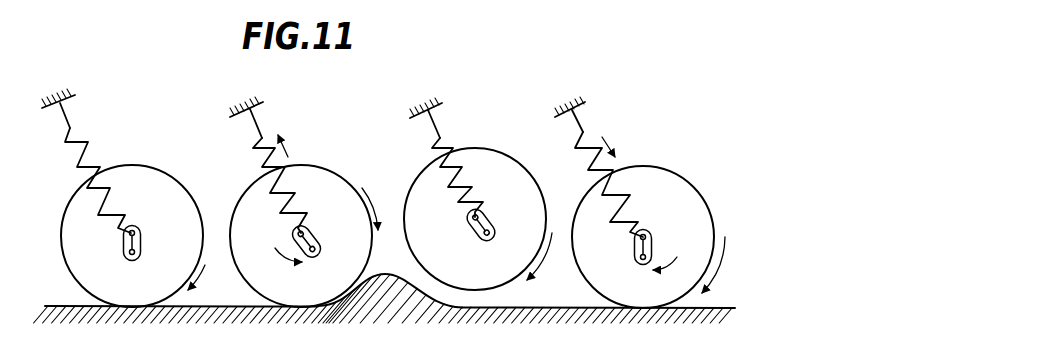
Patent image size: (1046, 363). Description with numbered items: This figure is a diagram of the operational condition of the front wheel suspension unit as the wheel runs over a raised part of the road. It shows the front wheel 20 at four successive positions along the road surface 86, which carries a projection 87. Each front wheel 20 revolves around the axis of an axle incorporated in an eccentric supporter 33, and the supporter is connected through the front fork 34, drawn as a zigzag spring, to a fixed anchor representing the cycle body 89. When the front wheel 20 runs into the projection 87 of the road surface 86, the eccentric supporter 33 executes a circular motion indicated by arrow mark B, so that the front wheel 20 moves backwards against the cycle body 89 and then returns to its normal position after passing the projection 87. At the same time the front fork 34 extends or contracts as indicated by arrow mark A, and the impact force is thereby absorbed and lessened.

The front wheel 20 is at (154, 166).
The eccentric supporter 33 is at (141, 240).
The front fork 34 is at (67, 150).
The road surface 86 is at (62, 306).
The projection 87 is at (399, 273).
The cycle body 89 is at (63, 96).